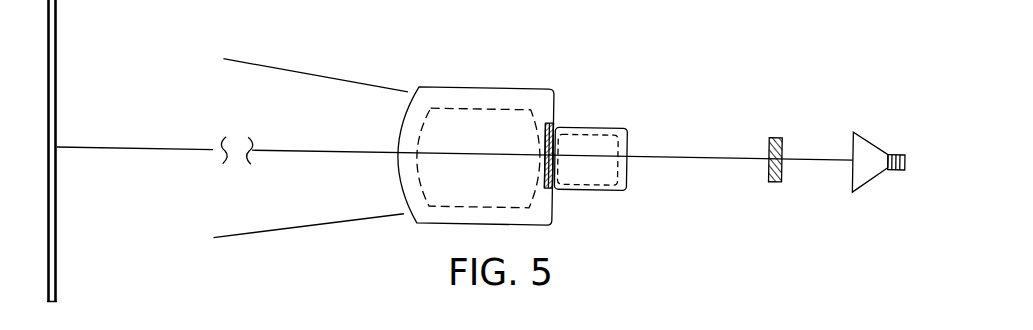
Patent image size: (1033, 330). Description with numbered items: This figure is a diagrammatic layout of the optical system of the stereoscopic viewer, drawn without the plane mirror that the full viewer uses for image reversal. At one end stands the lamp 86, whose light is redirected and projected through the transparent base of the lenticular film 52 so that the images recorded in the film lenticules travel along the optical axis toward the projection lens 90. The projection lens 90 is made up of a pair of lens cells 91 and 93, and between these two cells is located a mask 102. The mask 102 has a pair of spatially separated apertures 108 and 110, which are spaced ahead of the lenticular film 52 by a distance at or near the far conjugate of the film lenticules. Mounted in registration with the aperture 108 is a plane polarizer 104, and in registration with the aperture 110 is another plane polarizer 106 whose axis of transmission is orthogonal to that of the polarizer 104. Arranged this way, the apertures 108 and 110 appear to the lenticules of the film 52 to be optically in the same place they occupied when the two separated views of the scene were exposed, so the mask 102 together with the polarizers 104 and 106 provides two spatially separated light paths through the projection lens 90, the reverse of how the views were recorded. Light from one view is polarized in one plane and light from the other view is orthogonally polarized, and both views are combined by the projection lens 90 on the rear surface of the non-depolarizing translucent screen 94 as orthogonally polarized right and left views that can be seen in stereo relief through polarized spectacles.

The non-depolarizing screen 94 is at (58, 46).
The projection lens 90 is at (450, 79).
The lens cell 93 is at (487, 101).
The mask 102 is at (555, 119).
The plane polarizer 104 is at (545, 132).
The plane polarizer 106 is at (545, 168).
The aperture 108 is at (552, 129).
The aperture 110 is at (553, 164).
The lens cell 91 is at (605, 126).
The lenticular film 52 is at (780, 124).
The lamp 86 is at (873, 132).